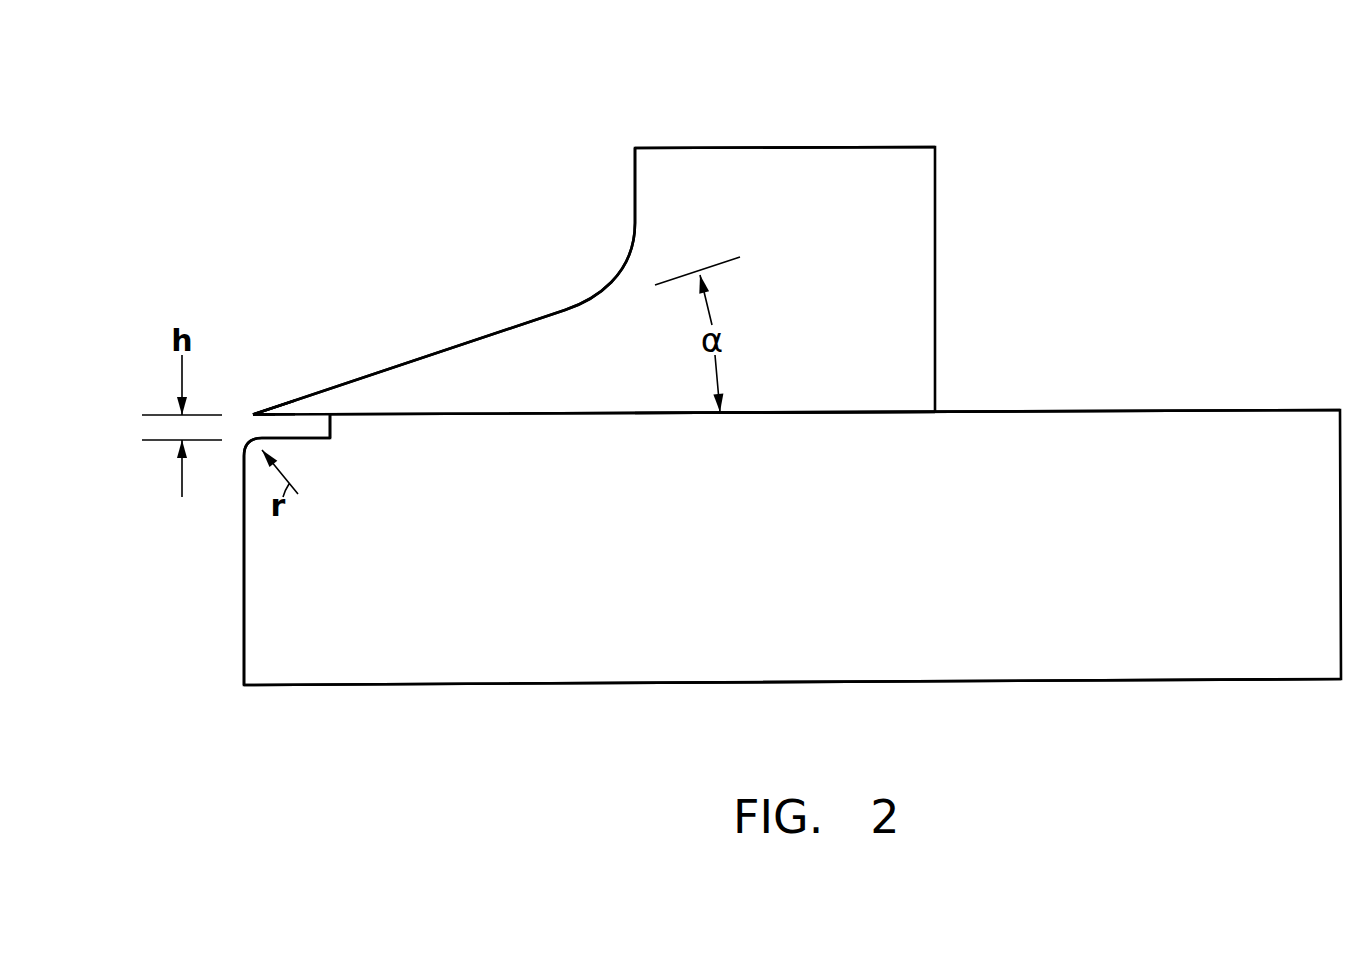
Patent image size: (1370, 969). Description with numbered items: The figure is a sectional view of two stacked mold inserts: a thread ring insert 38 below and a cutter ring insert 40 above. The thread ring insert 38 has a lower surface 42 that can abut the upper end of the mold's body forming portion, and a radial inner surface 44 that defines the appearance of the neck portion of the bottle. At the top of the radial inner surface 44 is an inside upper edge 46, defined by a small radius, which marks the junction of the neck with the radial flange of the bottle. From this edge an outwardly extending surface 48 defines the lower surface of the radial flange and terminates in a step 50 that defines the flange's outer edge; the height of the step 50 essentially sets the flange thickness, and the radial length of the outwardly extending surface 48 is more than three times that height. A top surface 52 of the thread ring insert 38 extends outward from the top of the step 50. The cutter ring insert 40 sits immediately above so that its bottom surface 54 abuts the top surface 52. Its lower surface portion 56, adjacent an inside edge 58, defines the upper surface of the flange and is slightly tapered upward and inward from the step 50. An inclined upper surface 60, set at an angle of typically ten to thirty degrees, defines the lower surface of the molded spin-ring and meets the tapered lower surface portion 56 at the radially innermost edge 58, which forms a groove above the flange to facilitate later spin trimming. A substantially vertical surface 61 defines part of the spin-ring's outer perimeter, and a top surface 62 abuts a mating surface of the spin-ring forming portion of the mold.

The thread ring insert 38 is at (1202, 643).
The cutter ring insert 40 is at (915, 172).
The lower surface 42 is at (558, 683).
The radial inner surface 44 is at (244, 602).
The inside upper edge 46 is at (253, 443).
The outwardly extending surface 48 is at (309, 438).
The step 50 is at (330, 427).
The top surface 52 is at (1170, 410).
The bottom surface 54 is at (824, 413).
The lower surface portion 56 is at (277, 417).
The inside edge 58 is at (253, 414).
The inclined upper surface 60 is at (465, 345).
The substantially vertical surface 61 is at (635, 170).
The top surface 62 is at (770, 147).